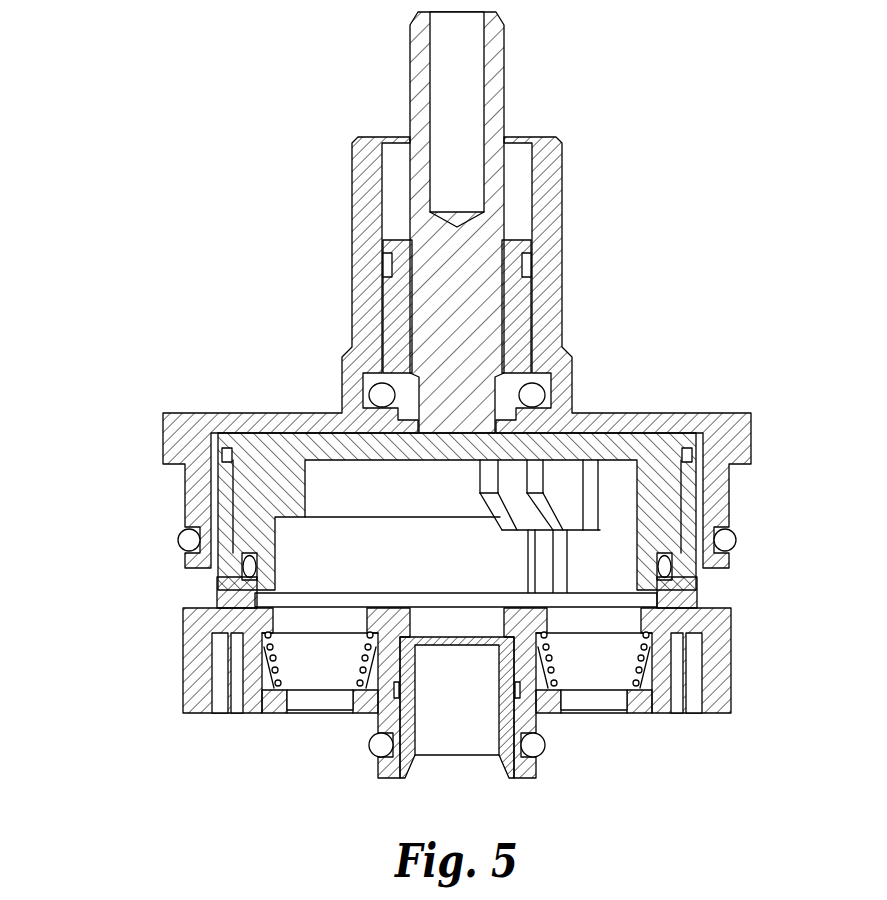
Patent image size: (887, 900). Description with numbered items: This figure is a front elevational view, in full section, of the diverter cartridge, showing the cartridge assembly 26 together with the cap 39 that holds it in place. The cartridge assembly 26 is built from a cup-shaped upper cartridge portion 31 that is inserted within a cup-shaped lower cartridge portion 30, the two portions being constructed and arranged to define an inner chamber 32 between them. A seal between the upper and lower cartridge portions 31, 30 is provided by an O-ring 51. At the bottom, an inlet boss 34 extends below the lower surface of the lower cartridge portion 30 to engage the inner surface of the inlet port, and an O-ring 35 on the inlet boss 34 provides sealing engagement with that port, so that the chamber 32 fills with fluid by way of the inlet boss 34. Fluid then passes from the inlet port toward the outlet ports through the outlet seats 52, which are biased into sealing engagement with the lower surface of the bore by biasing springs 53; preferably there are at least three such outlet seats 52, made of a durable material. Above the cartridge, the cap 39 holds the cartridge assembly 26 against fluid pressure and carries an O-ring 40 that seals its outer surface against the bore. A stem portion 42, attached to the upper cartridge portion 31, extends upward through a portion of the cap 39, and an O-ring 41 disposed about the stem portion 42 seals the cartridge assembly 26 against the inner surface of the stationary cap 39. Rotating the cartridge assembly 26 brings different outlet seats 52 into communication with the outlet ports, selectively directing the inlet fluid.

The cartridge assembly 26 is at (188, 589).
The lower cartridge portion 30 is at (718, 652).
The upper cartridge portion 31 is at (657, 527).
The chamber 32 is at (440, 570).
The inlet boss 34 is at (517, 770).
The O-ring 35 is at (547, 743).
The cap 39 is at (752, 420).
The O-ring 40 is at (736, 542).
The O-ring 41 is at (532, 395).
The stem portion 42 is at (492, 103).
The O-ring 51 is at (672, 575).
The outlet seats 52 is at (273, 707).
The biasing springs 53 is at (350, 666).